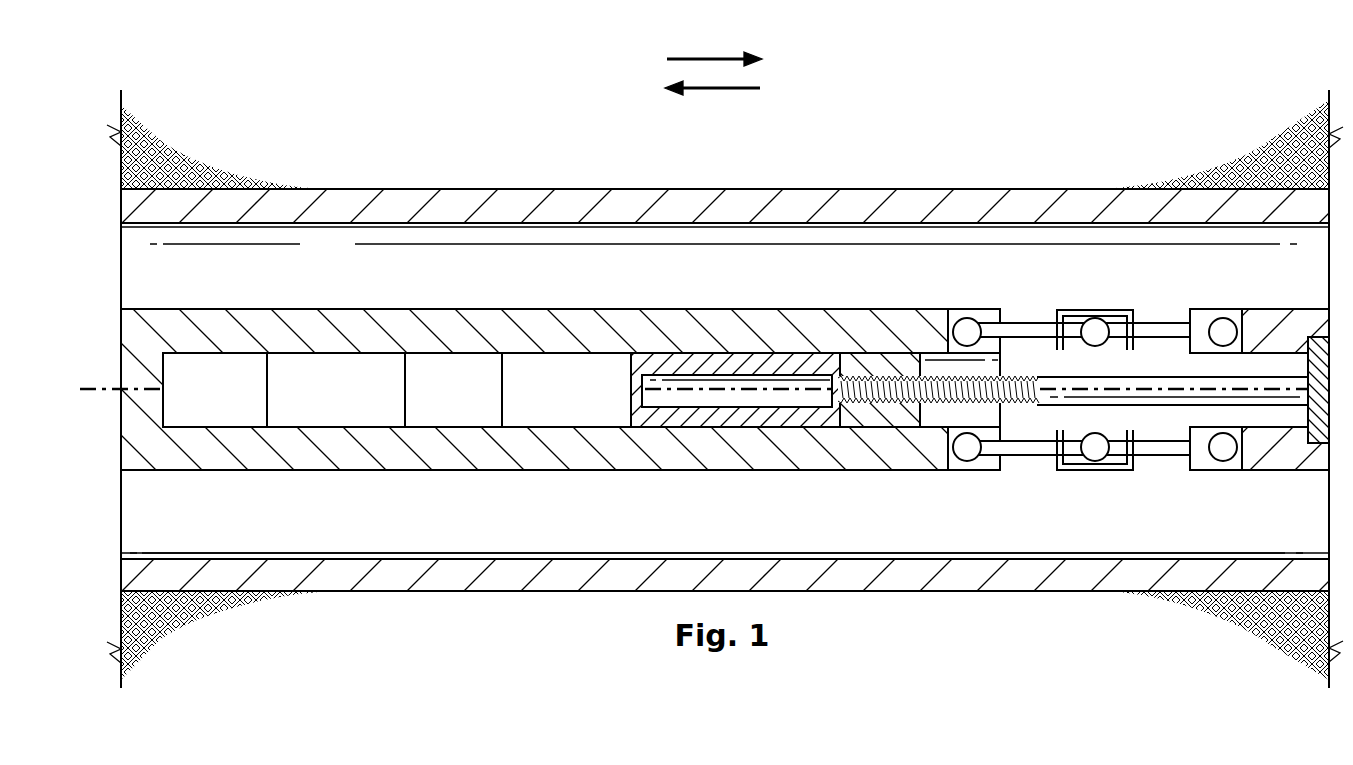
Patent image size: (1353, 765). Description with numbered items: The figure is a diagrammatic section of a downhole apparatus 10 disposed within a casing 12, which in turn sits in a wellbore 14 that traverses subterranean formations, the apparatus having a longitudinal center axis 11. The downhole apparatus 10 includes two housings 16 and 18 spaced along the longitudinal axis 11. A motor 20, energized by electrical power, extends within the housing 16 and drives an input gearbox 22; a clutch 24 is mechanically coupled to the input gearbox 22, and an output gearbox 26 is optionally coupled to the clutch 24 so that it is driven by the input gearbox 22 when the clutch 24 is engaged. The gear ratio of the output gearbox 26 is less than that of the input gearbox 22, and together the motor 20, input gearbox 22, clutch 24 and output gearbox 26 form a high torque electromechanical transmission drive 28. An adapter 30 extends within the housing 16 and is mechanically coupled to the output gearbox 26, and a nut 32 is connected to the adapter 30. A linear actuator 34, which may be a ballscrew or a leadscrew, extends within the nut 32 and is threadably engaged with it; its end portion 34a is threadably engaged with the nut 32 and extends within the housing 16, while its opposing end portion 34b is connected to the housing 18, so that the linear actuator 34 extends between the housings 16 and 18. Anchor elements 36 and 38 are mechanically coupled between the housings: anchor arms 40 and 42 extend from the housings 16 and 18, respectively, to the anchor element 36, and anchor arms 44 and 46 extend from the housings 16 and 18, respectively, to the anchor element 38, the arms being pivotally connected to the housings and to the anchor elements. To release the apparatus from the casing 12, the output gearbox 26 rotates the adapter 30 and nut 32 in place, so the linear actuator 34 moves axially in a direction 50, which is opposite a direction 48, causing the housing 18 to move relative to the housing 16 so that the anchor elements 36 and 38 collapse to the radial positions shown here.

The downhole apparatus 10 is at (344, 304).
The longitudinal center axis 11 is at (1265, 394).
The casing 12 is at (418, 232).
The wellbore 14 is at (326, 195).
The housing 16 is at (672, 471).
The housing 18 is at (1283, 472).
The motor 20 is at (227, 413).
The input gearbox 22 is at (322, 413).
The clutch 24 is at (457, 413).
The output gearbox 26 is at (552, 413).
The high torque electromechanical transmission drive 28 is at (464, 346).
The adapter 30 is at (760, 424).
The nut 32 is at (905, 424).
The linear actuator 34 is at (1112, 368).
The end portion 34a is at (820, 404).
The end portion 34b is at (1258, 372).
The anchor element 36 is at (1095, 471).
The anchor element 38 is at (1095, 310).
The anchor arm 40 is at (1010, 457).
The anchor arm 42 is at (1155, 457).
The anchor arm 44 is at (1012, 323).
The anchor arm 46 is at (1157, 323).
The direction 48 is at (738, 90).
The direction 50 is at (690, 57).